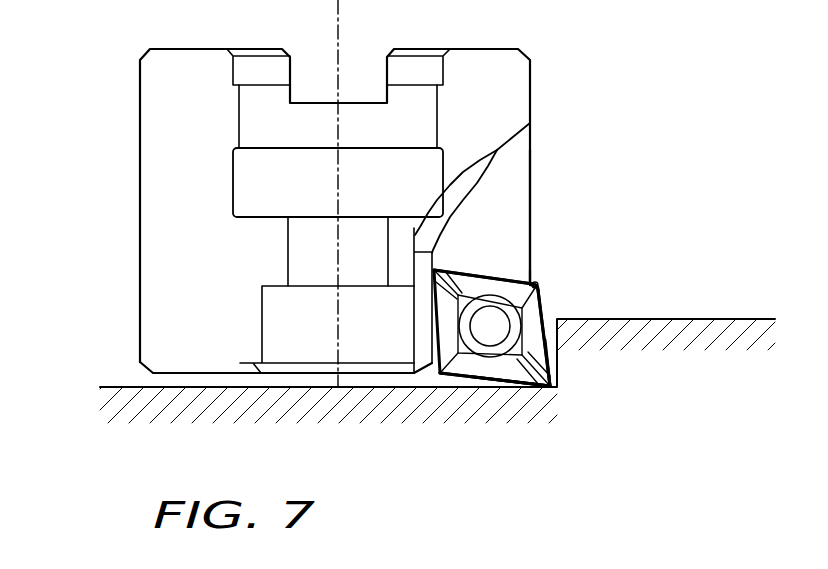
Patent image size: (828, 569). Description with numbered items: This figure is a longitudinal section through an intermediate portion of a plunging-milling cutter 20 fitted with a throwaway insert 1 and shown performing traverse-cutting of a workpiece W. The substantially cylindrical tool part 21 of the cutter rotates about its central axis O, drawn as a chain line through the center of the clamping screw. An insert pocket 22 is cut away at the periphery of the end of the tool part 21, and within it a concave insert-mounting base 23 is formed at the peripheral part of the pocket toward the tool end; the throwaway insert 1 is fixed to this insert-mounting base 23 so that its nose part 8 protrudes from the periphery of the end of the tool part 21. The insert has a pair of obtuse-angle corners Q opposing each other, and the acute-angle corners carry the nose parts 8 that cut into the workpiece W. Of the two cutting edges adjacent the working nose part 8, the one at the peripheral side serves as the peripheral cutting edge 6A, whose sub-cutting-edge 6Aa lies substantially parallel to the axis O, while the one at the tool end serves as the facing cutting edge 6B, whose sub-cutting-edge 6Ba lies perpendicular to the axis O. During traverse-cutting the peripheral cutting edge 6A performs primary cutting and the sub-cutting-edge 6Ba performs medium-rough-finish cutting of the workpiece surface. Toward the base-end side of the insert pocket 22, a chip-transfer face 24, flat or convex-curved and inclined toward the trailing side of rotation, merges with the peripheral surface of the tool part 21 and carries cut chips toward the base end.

The throwaway insert 1 is at (551, 339).
The peripheral cutting edge 6A is at (552, 338).
The sub-cutting-edge of the peripheral cutting edge 6Aa is at (552, 367).
The facing cutting edge 6B is at (488, 270).
The sub-cutting-edge of the facing cutting edge 6Ba is at (531, 386).
The nose part 8 is at (435, 270).
The plunging-milling cutter 20 is at (346, 211).
The tool part 21 is at (139, 209).
The insert pocket 22 is at (503, 157).
The insert-mounting base 23 is at (540, 285).
The chip-transfer face 24 is at (503, 198).
The central axis O is at (338, 58).
The obtuse-angle corner Q is at (539, 282).
The workpiece W is at (667, 318).